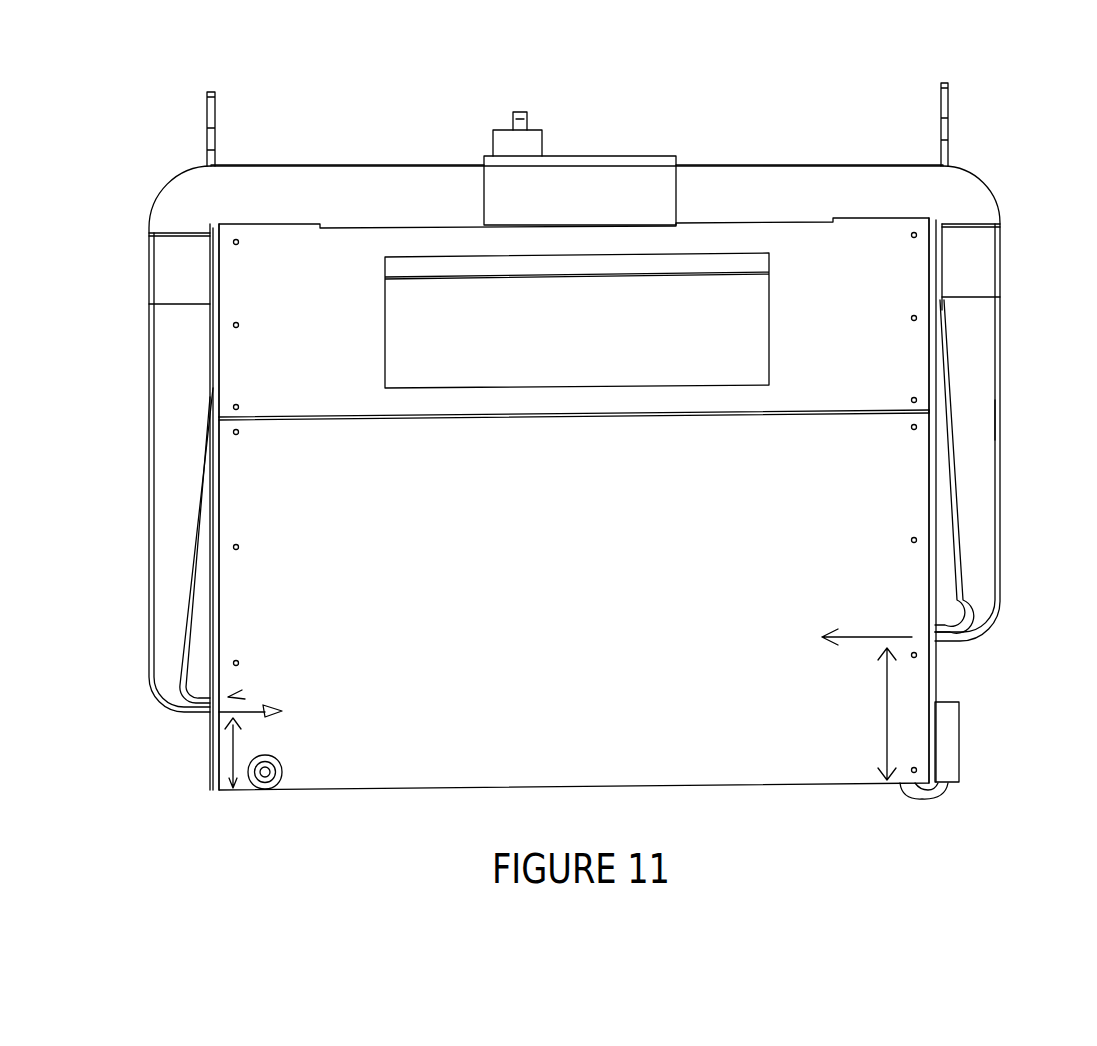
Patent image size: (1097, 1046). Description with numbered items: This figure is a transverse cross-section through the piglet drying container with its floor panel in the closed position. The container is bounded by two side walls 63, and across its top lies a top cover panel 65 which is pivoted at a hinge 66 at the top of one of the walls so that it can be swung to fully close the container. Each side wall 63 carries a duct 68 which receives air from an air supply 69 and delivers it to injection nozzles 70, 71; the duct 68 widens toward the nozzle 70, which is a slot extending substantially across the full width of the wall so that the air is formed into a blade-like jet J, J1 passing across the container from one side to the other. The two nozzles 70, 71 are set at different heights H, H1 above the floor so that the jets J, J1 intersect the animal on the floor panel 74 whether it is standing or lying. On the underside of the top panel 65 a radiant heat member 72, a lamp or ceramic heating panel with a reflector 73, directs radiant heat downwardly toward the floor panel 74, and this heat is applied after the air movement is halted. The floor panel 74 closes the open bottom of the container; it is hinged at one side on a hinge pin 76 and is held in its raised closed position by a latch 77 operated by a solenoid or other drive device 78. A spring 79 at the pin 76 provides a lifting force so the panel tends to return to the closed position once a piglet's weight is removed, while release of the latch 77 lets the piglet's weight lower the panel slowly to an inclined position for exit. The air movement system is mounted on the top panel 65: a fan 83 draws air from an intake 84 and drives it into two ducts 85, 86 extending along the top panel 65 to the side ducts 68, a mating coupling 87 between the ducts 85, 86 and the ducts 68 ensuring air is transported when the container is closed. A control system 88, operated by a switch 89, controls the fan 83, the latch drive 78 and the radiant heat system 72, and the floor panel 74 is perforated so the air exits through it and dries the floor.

The side wall 63 is at (220, 565).
The top cover panel 65 is at (708, 222).
The hinge 66 is at (531, 416).
The duct 68 is at (991, 426).
The air supply 69 is at (810, 166).
The injection nozzle 70 is at (925, 628).
The injection nozzle 71 is at (232, 748).
The radiant heat member 72 is at (460, 353).
The reflector 73 is at (410, 272).
The floor panel 74 is at (553, 783).
The hinge pin 76 is at (268, 757).
The latch 77 is at (945, 795).
The drive device 78 is at (944, 740).
The spring 79 is at (284, 763).
The fan 83 is at (572, 172).
The intake 84 is at (637, 147).
The duct 85 is at (366, 186).
The duct 86 is at (874, 185).
The mating coupling 87 is at (975, 230).
The control system 88 is at (493, 146).
The switch 89 is at (540, 68).
The height H is at (876, 705).
The height H1 is at (238, 694).
The jet J is at (848, 640).
The jet J1 is at (283, 717).